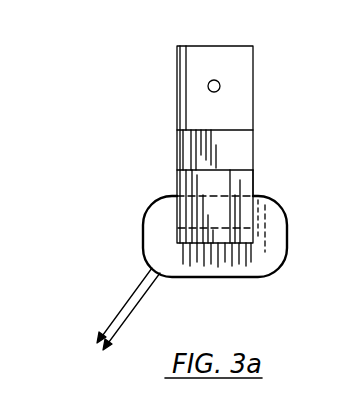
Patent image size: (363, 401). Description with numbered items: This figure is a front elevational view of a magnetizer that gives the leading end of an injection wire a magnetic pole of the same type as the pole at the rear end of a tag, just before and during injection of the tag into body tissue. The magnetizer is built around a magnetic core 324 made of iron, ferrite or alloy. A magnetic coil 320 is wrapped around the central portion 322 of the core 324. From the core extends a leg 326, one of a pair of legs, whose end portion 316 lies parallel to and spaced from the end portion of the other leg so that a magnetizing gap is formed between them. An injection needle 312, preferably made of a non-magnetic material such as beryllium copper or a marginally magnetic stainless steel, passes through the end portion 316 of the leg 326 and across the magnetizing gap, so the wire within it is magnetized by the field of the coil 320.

The injection needle 312 is at (208, 86).
The end portion 316 is at (242, 47).
The magnetic coil 320 is at (143, 221).
The central portion 322 is at (213, 243).
The magnetic core 324 is at (265, 177).
The leg 326 is at (176, 148).